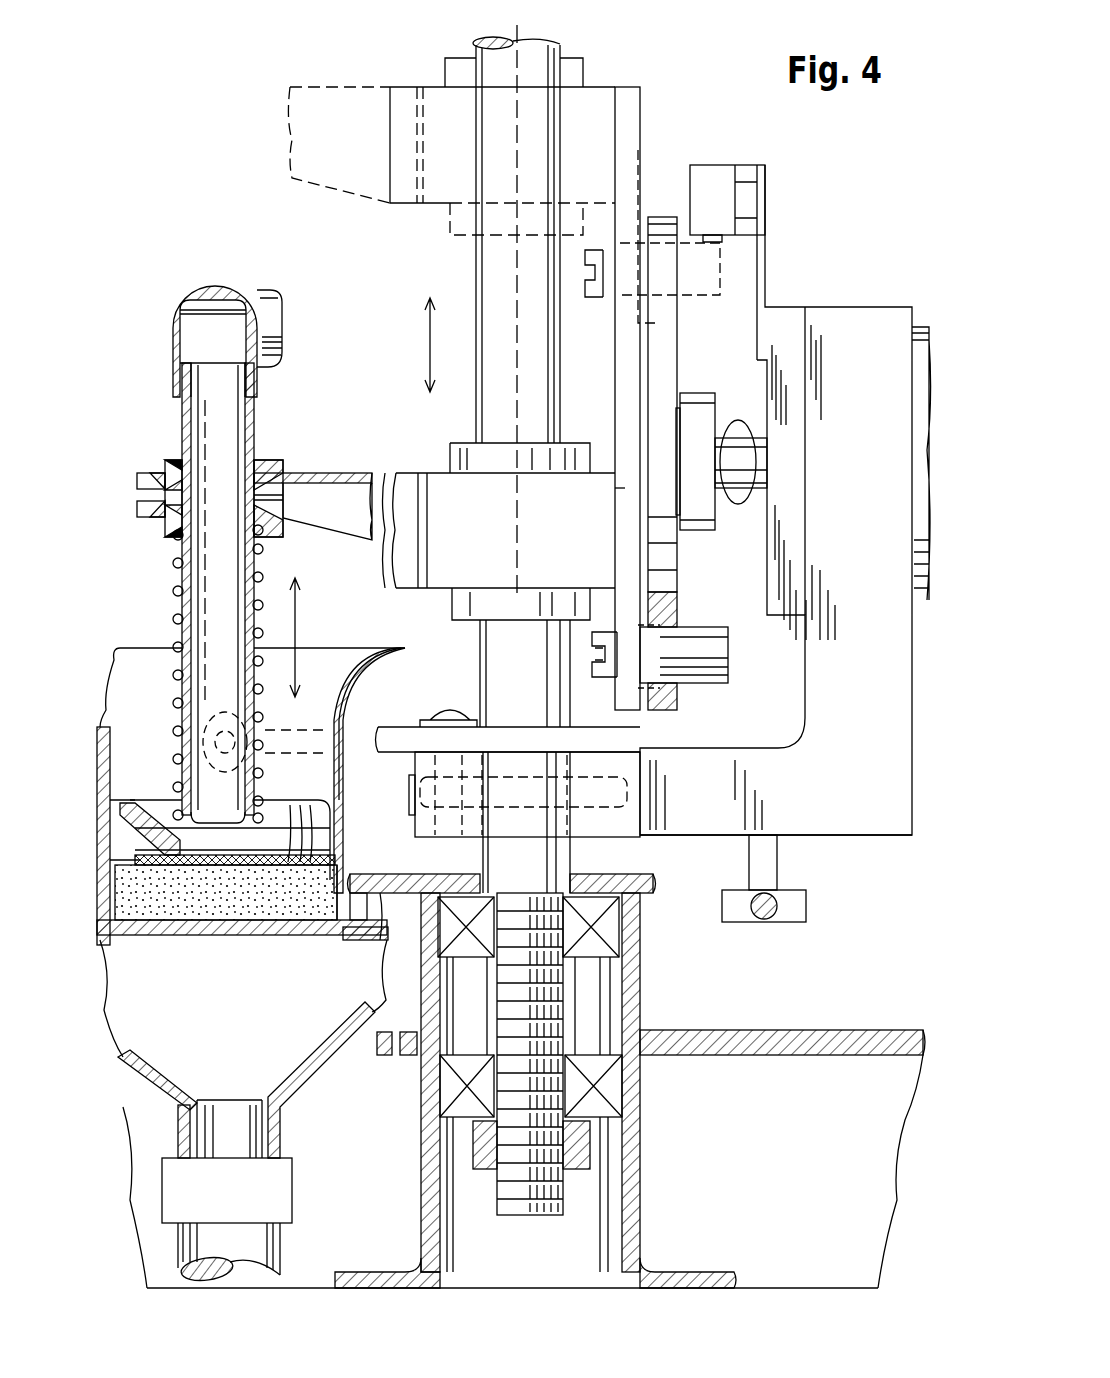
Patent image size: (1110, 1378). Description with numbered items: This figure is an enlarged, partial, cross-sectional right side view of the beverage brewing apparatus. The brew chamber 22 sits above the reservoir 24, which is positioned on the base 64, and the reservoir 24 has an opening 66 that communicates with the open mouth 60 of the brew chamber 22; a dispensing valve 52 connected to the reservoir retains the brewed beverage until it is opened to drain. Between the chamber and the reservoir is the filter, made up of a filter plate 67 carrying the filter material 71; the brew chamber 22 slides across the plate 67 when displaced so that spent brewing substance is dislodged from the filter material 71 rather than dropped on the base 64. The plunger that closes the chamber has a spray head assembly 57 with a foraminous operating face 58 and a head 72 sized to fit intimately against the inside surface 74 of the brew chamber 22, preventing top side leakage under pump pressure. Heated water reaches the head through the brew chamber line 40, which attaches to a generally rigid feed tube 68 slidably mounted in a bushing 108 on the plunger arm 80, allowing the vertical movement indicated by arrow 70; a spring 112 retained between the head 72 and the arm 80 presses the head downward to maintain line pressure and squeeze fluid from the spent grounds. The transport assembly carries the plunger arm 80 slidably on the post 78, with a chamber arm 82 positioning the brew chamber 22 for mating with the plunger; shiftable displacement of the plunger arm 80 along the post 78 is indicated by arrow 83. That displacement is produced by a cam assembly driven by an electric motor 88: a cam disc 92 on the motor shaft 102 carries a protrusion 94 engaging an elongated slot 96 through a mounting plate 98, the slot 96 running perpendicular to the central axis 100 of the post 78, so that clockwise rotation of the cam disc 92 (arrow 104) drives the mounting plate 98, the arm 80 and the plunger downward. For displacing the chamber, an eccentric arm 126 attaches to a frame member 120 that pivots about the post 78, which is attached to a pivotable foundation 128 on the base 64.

The brew chamber 22 is at (342, 820).
The reservoir 24 is at (331, 1094).
The brew chamber line 40 is at (247, 287).
The dispensing valve 52 is at (355, 1155).
The spray head assembly 57 is at (172, 777).
The foraminous operating face 58 is at (215, 935).
The open mouth 60 is at (320, 935).
The base 64 is at (790, 1030).
The opening 66 is at (340, 938).
The filter plate 67 is at (385, 900).
The feed tube 68 is at (183, 580).
The arrow 70 is at (300, 620).
The filter material 71 is at (262, 935).
The head 72 is at (305, 805).
The inside surface 74 is at (323, 693).
The post 78 is at (480, 262).
The plunger arm 80 is at (352, 87).
The chamber arm 82 is at (395, 740).
The arrow 83 is at (409, 345).
The electric motor 88 is at (916, 327).
The cam disc 92 is at (683, 700).
The protrusion 94 is at (592, 300).
The slot 96 is at (678, 648).
The mounting plate 98 is at (633, 700).
The axis 100 is at (476, 68).
The shaft 102 is at (733, 440).
The arrow 104 is at (733, 505).
The bushing 108 is at (283, 462).
The spring 112 is at (173, 562).
The frame member 120 is at (866, 820).
The eccentric arm 126 is at (806, 905).
The pivotable foundation 128 is at (640, 975).